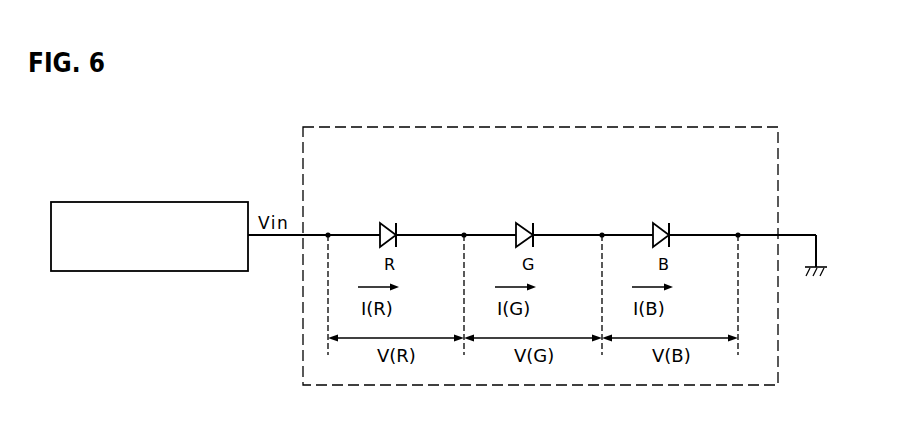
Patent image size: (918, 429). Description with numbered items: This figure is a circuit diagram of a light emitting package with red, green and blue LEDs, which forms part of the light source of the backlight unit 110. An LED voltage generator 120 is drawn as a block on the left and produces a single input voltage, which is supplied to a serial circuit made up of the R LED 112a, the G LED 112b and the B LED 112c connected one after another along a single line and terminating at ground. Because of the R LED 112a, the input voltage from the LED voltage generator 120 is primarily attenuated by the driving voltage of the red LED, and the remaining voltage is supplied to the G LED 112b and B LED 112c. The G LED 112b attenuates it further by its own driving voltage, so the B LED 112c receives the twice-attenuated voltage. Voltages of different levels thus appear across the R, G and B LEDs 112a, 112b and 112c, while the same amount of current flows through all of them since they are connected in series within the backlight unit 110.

The LED voltage generator 120 is at (152, 201).
The backlight unit 110 is at (778, 171).
The R LED 112a is at (392, 222).
The G LED 112b is at (529, 222).
The B LED 112c is at (665, 222).